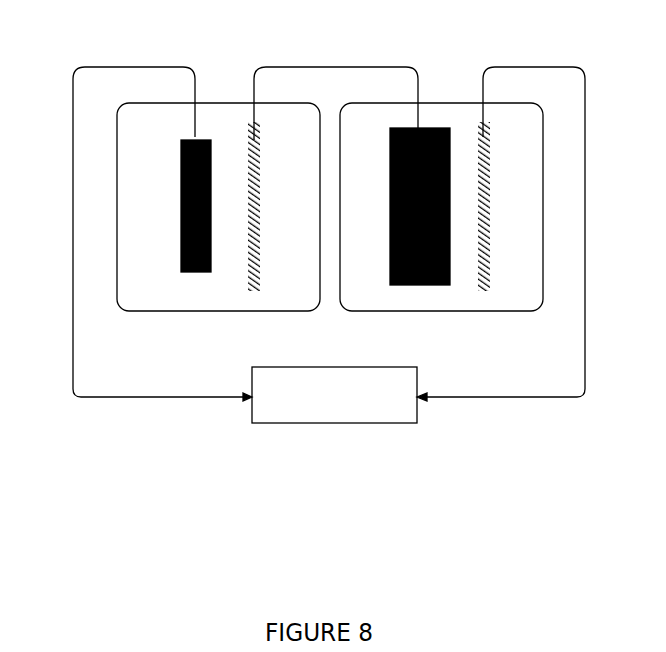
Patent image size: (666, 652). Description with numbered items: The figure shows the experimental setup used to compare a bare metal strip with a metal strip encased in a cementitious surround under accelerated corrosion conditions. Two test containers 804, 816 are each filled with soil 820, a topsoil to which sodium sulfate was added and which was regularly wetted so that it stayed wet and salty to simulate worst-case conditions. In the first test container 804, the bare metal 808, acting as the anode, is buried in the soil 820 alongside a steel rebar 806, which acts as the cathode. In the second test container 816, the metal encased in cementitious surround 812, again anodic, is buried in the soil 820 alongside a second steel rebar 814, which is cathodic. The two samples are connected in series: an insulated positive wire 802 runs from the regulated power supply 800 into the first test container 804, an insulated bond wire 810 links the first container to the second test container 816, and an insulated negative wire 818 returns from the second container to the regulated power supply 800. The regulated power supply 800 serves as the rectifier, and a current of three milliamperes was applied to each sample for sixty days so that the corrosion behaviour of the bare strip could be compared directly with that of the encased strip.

The regulated power supply 800 is at (335, 406).
The insulated positive wire 802 is at (73, 192).
The test container 804 is at (117, 178).
The steel rebar (cathodic) 806 is at (248, 185).
The bare metal (anodic) 808 is at (181, 144).
The insulated bond wire 810 is at (327, 67).
The metal encased in cementitious surround (anodic) 812 is at (450, 143).
The steel rebar (cathodic) 814 is at (490, 175).
The test container 816 is at (543, 198).
The insulated negative wire 818 is at (585, 217).
The soil 820 is at (239, 132).